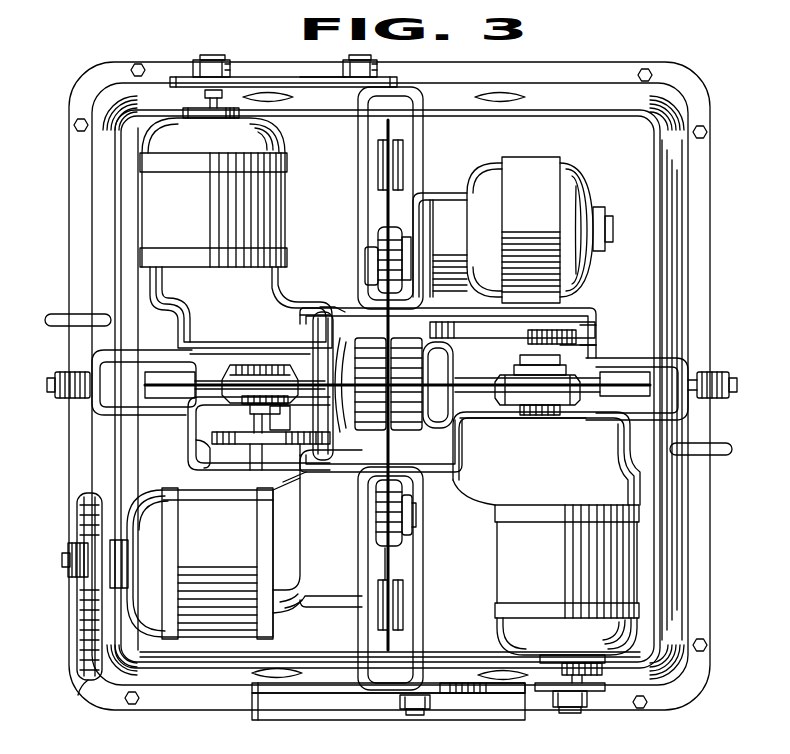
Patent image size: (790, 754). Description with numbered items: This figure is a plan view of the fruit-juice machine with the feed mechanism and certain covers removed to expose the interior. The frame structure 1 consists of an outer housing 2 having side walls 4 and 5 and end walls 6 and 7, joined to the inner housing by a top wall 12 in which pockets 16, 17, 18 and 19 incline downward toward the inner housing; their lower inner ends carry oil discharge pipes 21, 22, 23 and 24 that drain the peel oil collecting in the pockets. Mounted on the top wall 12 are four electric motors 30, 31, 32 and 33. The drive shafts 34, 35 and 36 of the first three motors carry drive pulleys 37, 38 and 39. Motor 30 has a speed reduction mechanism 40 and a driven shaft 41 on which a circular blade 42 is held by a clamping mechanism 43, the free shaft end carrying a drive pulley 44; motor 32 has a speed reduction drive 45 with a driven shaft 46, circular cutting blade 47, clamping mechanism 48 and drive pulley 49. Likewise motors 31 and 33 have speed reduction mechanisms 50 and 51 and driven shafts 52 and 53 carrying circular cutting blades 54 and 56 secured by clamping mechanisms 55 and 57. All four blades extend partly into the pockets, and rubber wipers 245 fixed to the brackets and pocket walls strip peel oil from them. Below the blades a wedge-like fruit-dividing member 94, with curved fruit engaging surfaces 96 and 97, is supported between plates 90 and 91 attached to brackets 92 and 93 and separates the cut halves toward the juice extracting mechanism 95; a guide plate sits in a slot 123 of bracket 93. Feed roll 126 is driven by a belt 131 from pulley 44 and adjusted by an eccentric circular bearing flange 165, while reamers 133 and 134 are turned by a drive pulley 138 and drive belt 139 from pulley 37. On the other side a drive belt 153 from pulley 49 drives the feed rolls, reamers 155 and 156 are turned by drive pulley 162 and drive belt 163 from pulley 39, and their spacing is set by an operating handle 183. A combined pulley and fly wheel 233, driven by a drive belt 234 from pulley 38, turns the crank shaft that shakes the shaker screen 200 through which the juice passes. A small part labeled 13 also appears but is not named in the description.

The frame structure 1 is at (712, 200).
The outer housing 2 is at (686, 320).
The side wall 4 is at (109, 286).
The side wall 5 is at (712, 258).
The end wall 6 is at (590, 106).
The end wall 7 is at (230, 695).
The top wall 12 is at (630, 163).
The bearing 13 is at (379, 387).
The pocket 16 is at (128, 396).
The pocket 17 is at (662, 395).
The pocket 18 is at (394, 671).
The pocket 19 is at (396, 115).
The oil discharge pipe 21 is at (50, 380).
The oil discharge pipe 22 is at (735, 380).
The oil discharge pipe 23 is at (730, 443).
The oil discharge pipe 24 is at (52, 314).
The electric motor 30 is at (198, 218).
The electric motor 31 is at (223, 558).
The electric motor 32 is at (548, 571).
The electric motor 33 is at (536, 218).
The drive shaft 34 is at (203, 95).
The drive shaft 35 is at (62, 566).
The drive shaft 36 is at (568, 676).
The drive pulley 37 is at (238, 77).
The drive pulley 38 is at (80, 548).
The drive pulley 39 is at (590, 707).
The speed reduction mechanism 40 is at (263, 337).
The driven shaft 41 is at (256, 465).
The circular blade 42 is at (232, 400).
The clamping mechanism 43 is at (248, 416).
The drive pulley 44 is at (228, 448).
The speed reduction drive 45 is at (552, 465).
The driven shaft 46 is at (530, 332).
The circular cutting blade 47 is at (575, 378).
The clamping mechanism 48 is at (552, 350).
The drive pulley 49 is at (606, 302).
The speed reduction mechanism 50 is at (340, 528).
The speed reduction mechanism 51 is at (452, 247).
The driven shaft 52 is at (412, 510).
The driven shaft 53 is at (365, 265).
The circular cutting blade 54 is at (392, 562).
The clamping mechanism 55 is at (402, 540).
The circular blade 56 is at (380, 208).
The clamping mechanism 57 is at (378, 240).
The plate 90 is at (336, 462).
The plate 91 is at (340, 312).
The bracket 92 is at (196, 430).
The bracket 93 is at (596, 348).
The fruit-dividing member 94 is at (313, 345).
The juice extracting mechanism 95 is at (440, 332).
The fruit engaging surface 96 is at (370, 384).
The fruit engaging surface 97 is at (406, 384).
The slot 123 is at (305, 352).
The feed roll 126 is at (305, 416).
The belt 131 is at (192, 450).
The reamer 133 is at (306, 316).
The reamer 134 is at (302, 453).
The drive pulley 138 is at (385, 77).
The drive belt 139 is at (322, 52).
The drive belt 153 is at (596, 330).
The reamer 155 is at (440, 365).
The reamer 156 is at (495, 412).
The drive pulley 162 is at (430, 700).
The drive belt 163 is at (485, 693).
The circular bearing flange 165 is at (65, 398).
The operating handle 183 is at (728, 398).
The shaker screen 200 is at (330, 719).
The combined pulley and fly wheel 233 is at (80, 610).
The drive belt 234 is at (88, 682).
The rubber wiper 245 is at (403, 150).